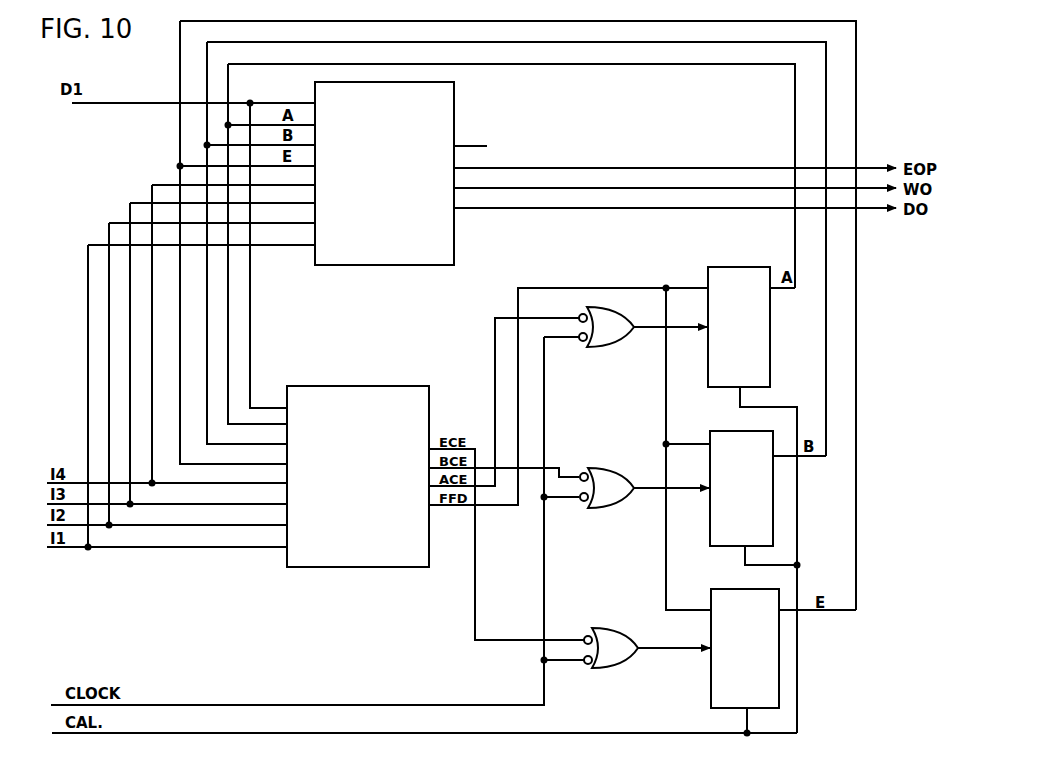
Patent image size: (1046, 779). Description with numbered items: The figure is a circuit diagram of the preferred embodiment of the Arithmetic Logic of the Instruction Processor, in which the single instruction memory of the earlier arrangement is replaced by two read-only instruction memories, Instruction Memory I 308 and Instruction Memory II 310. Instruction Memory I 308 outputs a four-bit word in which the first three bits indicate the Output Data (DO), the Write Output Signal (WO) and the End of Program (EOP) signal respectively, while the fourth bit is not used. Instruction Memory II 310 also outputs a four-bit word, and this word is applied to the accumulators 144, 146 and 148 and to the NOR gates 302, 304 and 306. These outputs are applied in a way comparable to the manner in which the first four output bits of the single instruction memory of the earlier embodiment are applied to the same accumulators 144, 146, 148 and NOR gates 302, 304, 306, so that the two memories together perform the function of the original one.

The Instruction Memory I 308 is at (454, 115).
The Instruction Memory II 310 is at (380, 363).
The NOR gate 302 is at (594, 347).
The NOR gate 304 is at (596, 508).
The NOR gate 306 is at (600, 668).
The accumulator 144 is at (770, 327).
The accumulator 146 is at (728, 546).
The accumulator 148 is at (711, 692).